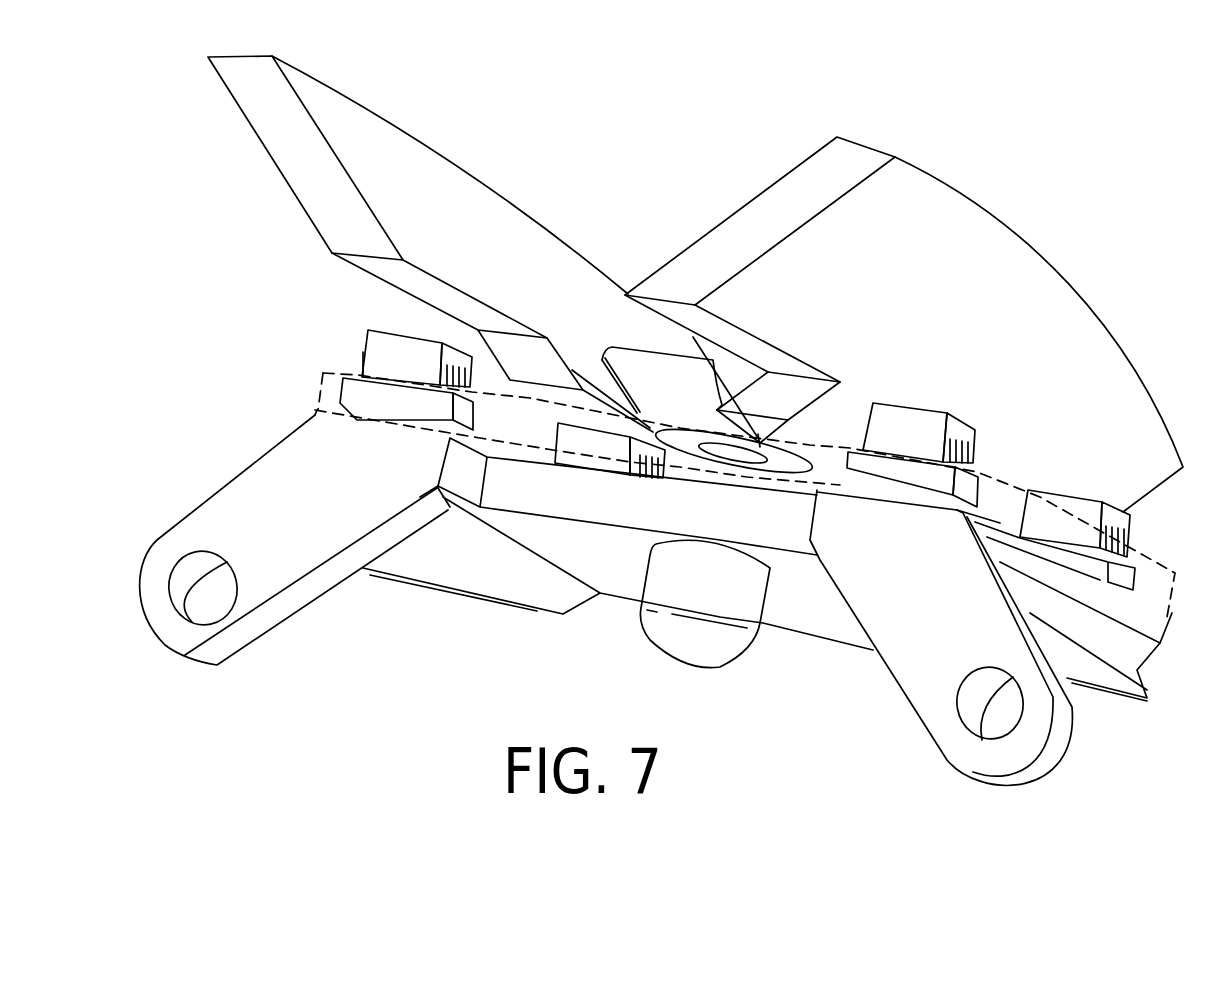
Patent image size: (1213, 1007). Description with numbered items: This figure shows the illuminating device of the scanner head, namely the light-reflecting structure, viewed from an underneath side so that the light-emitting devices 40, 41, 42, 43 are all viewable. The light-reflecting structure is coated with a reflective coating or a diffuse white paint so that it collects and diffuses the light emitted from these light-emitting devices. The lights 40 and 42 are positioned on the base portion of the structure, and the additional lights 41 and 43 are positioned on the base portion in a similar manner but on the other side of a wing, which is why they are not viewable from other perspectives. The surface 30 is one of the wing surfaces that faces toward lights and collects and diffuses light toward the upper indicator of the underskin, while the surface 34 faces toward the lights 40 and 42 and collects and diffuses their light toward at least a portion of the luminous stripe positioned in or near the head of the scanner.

The surface 30 is at (471, 232).
The surface 34 is at (891, 299).
The light-emitting device 40 is at (1068, 507).
The light-emitting device 41 is at (592, 445).
The light-emitting device 42 is at (917, 425).
The light-emitting device 43 is at (382, 348).